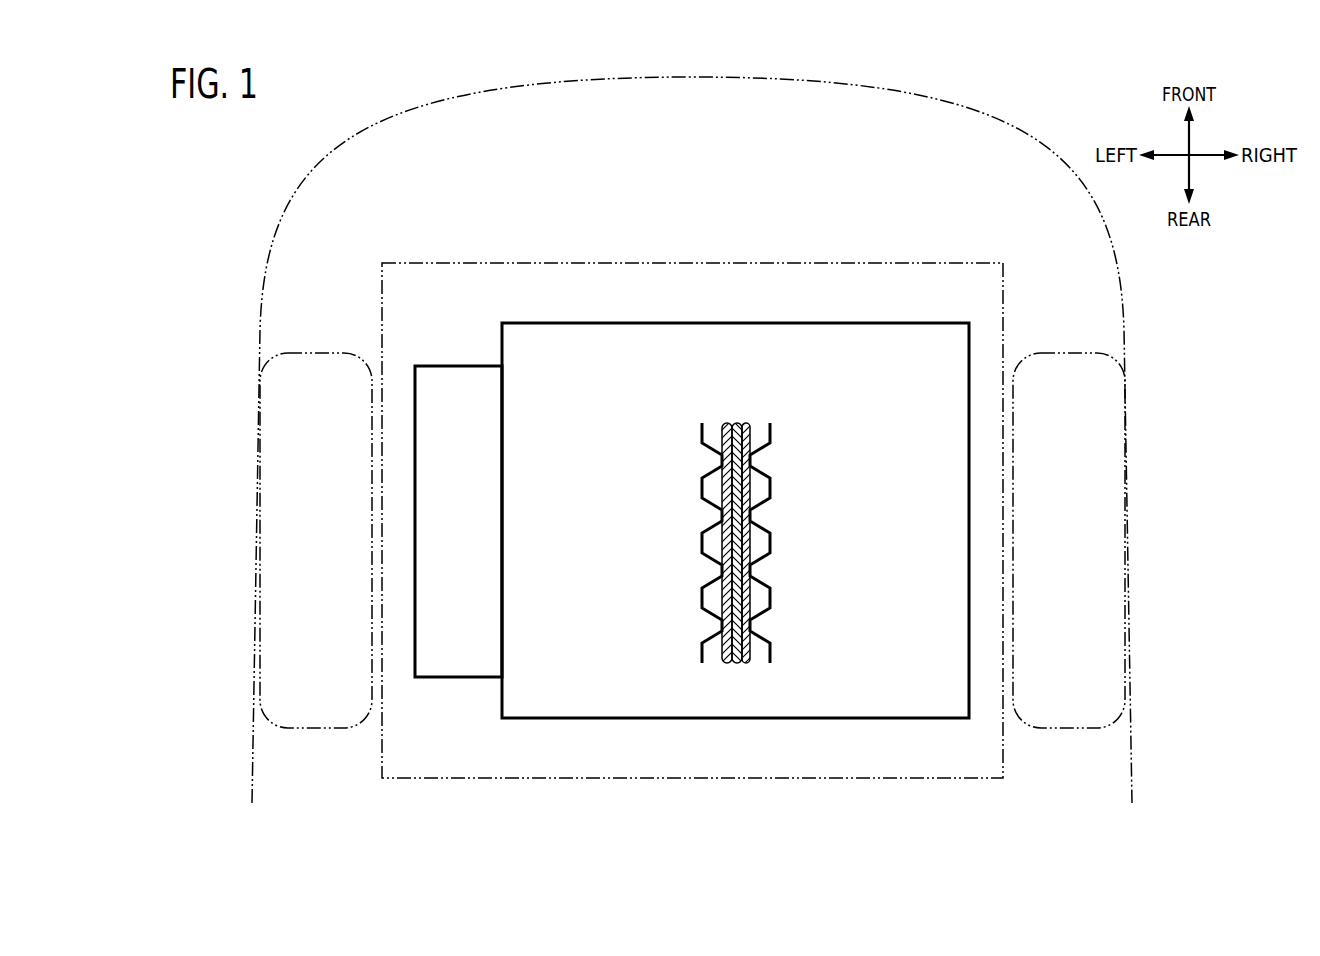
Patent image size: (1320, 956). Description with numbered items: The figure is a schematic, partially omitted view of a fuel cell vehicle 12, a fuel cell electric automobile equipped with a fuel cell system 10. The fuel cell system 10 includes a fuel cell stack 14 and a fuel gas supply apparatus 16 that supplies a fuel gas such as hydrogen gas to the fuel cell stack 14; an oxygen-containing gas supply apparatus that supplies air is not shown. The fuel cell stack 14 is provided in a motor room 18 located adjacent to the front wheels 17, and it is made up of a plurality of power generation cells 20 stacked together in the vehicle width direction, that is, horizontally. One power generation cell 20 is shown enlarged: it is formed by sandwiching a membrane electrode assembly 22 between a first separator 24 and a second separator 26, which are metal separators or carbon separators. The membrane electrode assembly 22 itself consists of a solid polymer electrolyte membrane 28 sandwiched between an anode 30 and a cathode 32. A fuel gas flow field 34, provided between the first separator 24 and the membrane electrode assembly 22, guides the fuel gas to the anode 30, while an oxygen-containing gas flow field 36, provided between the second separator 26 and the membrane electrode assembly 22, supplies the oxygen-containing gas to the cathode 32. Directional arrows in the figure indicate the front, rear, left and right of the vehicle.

The fuel cell system 10 is at (692, 465).
The fuel cell vehicle 12 is at (241, 156).
The fuel cell stack 14 is at (785, 313).
The fuel gas supply apparatus 16 is at (462, 365).
The front wheels 17 is at (307, 353).
The motor room 18 is at (669, 262).
The power generation cell 20 is at (755, 503).
The membrane electrode assembly 22 is at (735, 503).
The first separator 24 is at (760, 485).
The second separator 26 is at (712, 486).
The solid polymer electrolyte membrane 28 is at (735, 424).
The anode 30 is at (763, 519).
The cathode 32 is at (723, 434).
The fuel gas flow field 34 is at (760, 545).
The oxygen-containing gas flow field 36 is at (712, 549).